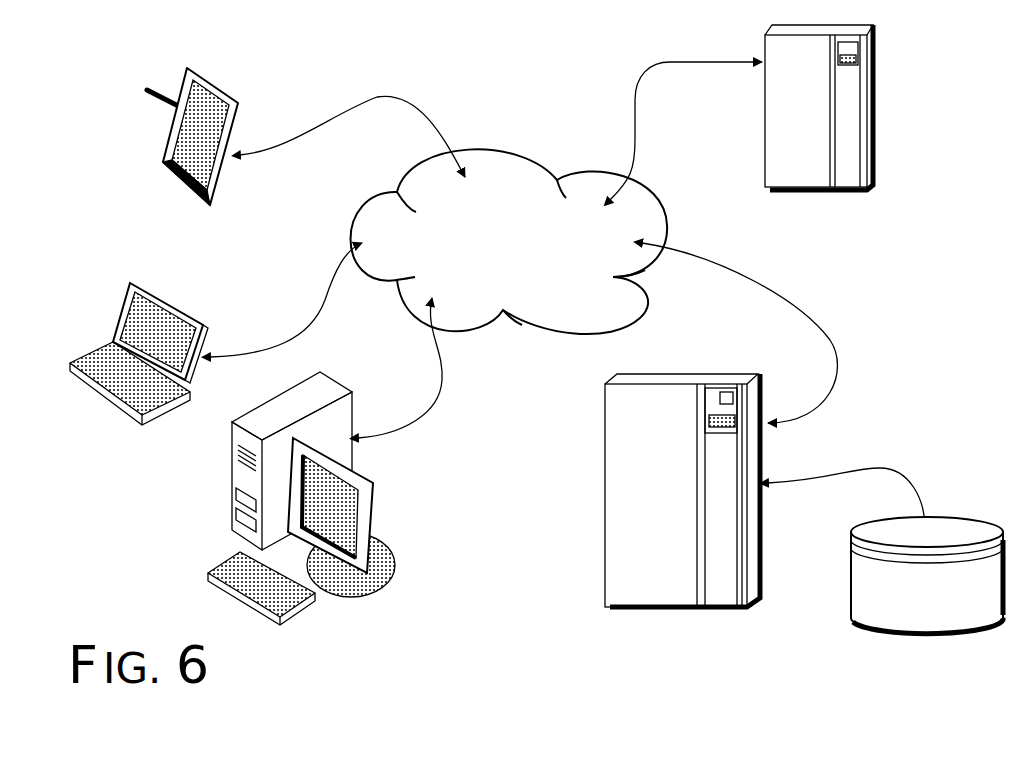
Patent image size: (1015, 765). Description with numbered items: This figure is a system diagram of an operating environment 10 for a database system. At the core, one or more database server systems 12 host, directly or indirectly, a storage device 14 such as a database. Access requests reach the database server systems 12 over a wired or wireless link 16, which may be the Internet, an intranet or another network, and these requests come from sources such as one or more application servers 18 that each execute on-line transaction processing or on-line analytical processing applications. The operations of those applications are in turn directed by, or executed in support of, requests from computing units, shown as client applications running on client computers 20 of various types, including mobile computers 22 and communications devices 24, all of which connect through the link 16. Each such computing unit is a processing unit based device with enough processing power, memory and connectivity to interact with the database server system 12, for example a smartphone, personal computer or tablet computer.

The operating environment 10 is at (373, 668).
The database server system 12 is at (605, 470).
The storage device 14 is at (955, 518).
The wired or wireless link 16 is at (598, 316).
The application server 18 is at (765, 108).
The client computer 20 is at (373, 492).
The mobile computer 22 is at (195, 317).
The communications device 24 is at (230, 100).